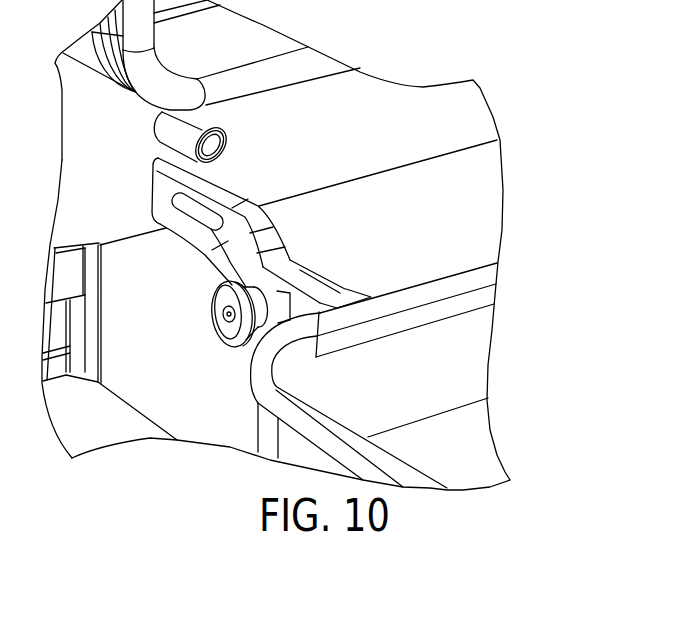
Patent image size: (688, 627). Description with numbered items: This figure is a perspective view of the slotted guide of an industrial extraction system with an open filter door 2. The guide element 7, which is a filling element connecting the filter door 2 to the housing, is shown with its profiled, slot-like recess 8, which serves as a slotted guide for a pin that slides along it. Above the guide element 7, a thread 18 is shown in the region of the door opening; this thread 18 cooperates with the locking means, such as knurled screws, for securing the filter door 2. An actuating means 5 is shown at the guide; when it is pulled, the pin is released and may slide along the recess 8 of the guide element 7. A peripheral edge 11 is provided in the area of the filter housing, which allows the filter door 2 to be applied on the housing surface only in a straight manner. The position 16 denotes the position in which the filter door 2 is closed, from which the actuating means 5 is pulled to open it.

The filter door 2 is at (473, 327).
The actuating means 5 is at (231, 330).
The guide element 7 is at (265, 237).
The recess 8 is at (210, 229).
The peripheral edge 11 is at (141, 78).
The position 16 is at (180, 207).
The thread 18 is at (227, 139).